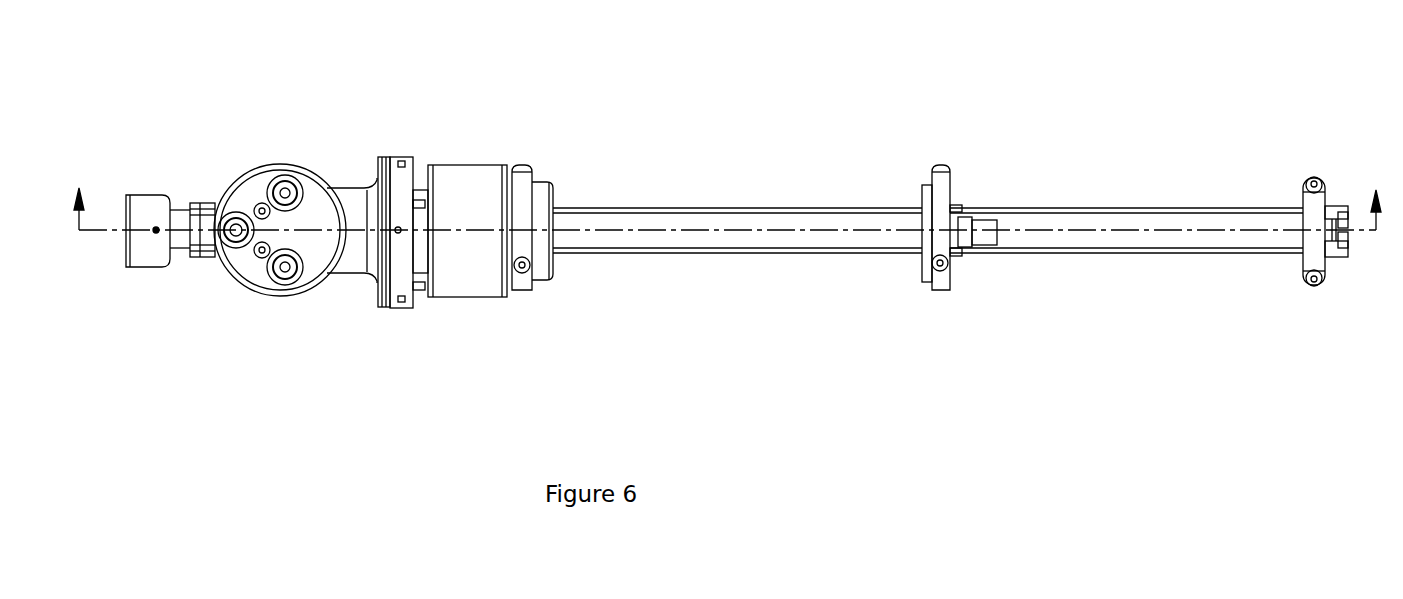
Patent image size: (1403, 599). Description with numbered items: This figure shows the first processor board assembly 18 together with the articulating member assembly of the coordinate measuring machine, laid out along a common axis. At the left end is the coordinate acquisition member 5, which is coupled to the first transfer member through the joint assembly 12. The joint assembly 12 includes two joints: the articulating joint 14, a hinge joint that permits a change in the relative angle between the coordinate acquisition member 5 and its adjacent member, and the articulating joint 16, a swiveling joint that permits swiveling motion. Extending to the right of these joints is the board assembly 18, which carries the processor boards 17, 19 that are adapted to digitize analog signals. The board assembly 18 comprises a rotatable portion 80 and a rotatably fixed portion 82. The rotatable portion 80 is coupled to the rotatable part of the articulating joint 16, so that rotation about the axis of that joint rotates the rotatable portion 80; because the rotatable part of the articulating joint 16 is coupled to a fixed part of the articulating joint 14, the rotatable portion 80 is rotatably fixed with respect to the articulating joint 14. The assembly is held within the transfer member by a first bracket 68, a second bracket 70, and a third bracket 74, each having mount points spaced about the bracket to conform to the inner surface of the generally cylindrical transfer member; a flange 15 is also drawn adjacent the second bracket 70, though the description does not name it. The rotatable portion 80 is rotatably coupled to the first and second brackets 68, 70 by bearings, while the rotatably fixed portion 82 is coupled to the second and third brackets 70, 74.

The coordinate acquisition member 5 is at (155, 200).
The joint assembly 12 is at (359, 197).
The articulating joint 14 is at (270, 172).
The flange 15 is at (926, 208).
The articulating joint 16 is at (478, 186).
The processor board 17 is at (710, 255).
The processor board assembly 18 is at (670, 242).
The processor board 19 is at (1130, 268).
The first bracket 68 is at (521, 185).
The second bracket 70 is at (938, 163).
The third bracket 74 is at (1319, 196).
The rotatable portion 80 is at (737, 214).
The rotatably fixed portion 82 is at (1126, 155).